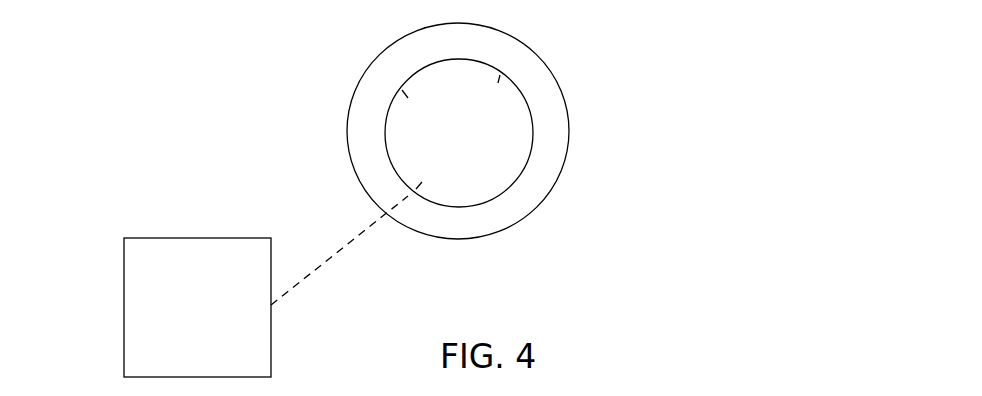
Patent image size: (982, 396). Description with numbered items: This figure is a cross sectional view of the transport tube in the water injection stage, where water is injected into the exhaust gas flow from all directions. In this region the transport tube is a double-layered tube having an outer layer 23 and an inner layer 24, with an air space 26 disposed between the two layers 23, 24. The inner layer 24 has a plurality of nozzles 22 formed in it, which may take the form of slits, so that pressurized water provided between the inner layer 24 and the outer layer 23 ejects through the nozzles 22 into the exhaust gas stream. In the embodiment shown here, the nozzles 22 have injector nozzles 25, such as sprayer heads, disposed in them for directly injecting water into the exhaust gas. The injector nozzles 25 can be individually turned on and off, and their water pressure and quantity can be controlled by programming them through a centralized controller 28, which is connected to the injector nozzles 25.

The nozzles 22 is at (504, 181).
The outer layer 23 is at (570, 137).
The inner layer 24 is at (470, 60).
The injector nozzles 25 is at (420, 185).
The air space 26 is at (508, 131).
The centralized controller 28 is at (123, 275).